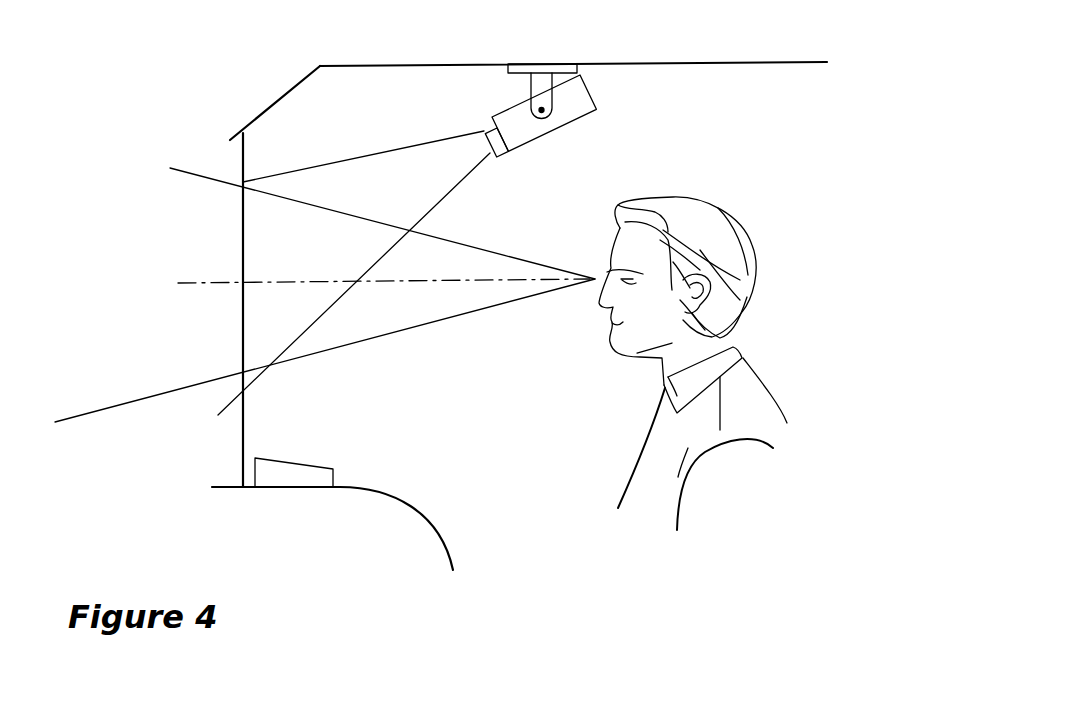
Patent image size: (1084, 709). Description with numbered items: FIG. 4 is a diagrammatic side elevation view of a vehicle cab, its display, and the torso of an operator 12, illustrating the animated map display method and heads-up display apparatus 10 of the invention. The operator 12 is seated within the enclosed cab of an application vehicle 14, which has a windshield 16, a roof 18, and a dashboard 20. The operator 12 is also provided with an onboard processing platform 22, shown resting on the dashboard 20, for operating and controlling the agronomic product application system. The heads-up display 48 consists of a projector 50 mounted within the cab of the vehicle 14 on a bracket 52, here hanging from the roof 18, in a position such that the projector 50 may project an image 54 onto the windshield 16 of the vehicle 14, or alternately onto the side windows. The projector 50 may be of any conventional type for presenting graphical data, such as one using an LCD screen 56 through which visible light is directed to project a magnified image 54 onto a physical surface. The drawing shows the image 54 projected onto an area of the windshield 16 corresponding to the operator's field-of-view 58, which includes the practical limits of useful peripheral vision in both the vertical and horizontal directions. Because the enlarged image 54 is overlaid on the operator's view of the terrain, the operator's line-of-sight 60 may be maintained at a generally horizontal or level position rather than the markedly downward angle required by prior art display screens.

The animated map display method and heads-up display apparatus 10 is at (805, 172).
The operator 12 is at (763, 382).
The application vehicle 14 is at (332, 479).
The windshield 16 is at (243, 225).
The roof 18 is at (768, 62).
The dashboard 20 is at (402, 498).
The onboard processing platform 22 is at (310, 463).
The heads-up display 48 is at (566, 81).
The projector 50 is at (517, 114).
The bracket 52 is at (547, 63).
The image 54 is at (410, 145).
The LCD screen 56 is at (486, 128).
The field-of-view 58 is at (208, 177).
The line-of-sight 60 is at (473, 277).